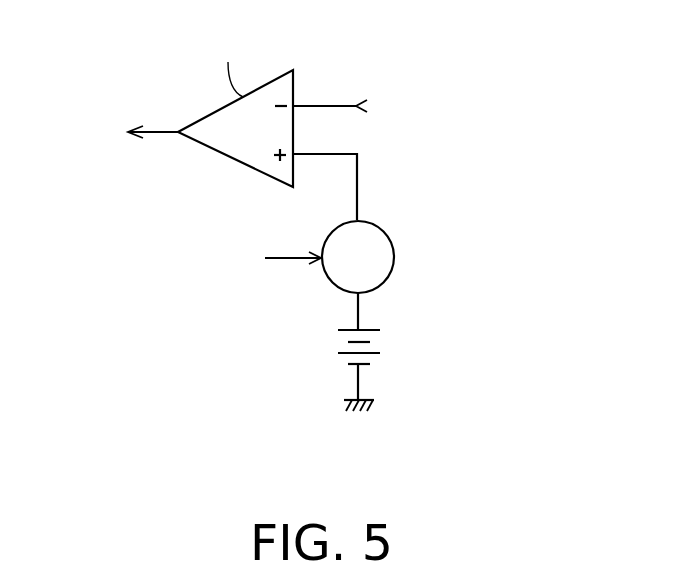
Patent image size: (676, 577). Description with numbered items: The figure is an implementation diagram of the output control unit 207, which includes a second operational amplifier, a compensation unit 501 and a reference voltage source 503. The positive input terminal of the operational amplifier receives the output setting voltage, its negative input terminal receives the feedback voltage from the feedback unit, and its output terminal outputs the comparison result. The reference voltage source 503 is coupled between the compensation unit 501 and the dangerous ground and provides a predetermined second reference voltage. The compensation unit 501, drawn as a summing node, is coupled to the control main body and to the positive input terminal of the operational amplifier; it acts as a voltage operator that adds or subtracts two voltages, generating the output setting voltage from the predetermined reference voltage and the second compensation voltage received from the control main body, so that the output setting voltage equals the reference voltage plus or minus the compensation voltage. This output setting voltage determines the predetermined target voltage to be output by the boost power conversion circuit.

The output control unit 207 is at (321, 234).
The compensation unit 501 is at (395, 257).
The reference voltage source 503 is at (333, 343).